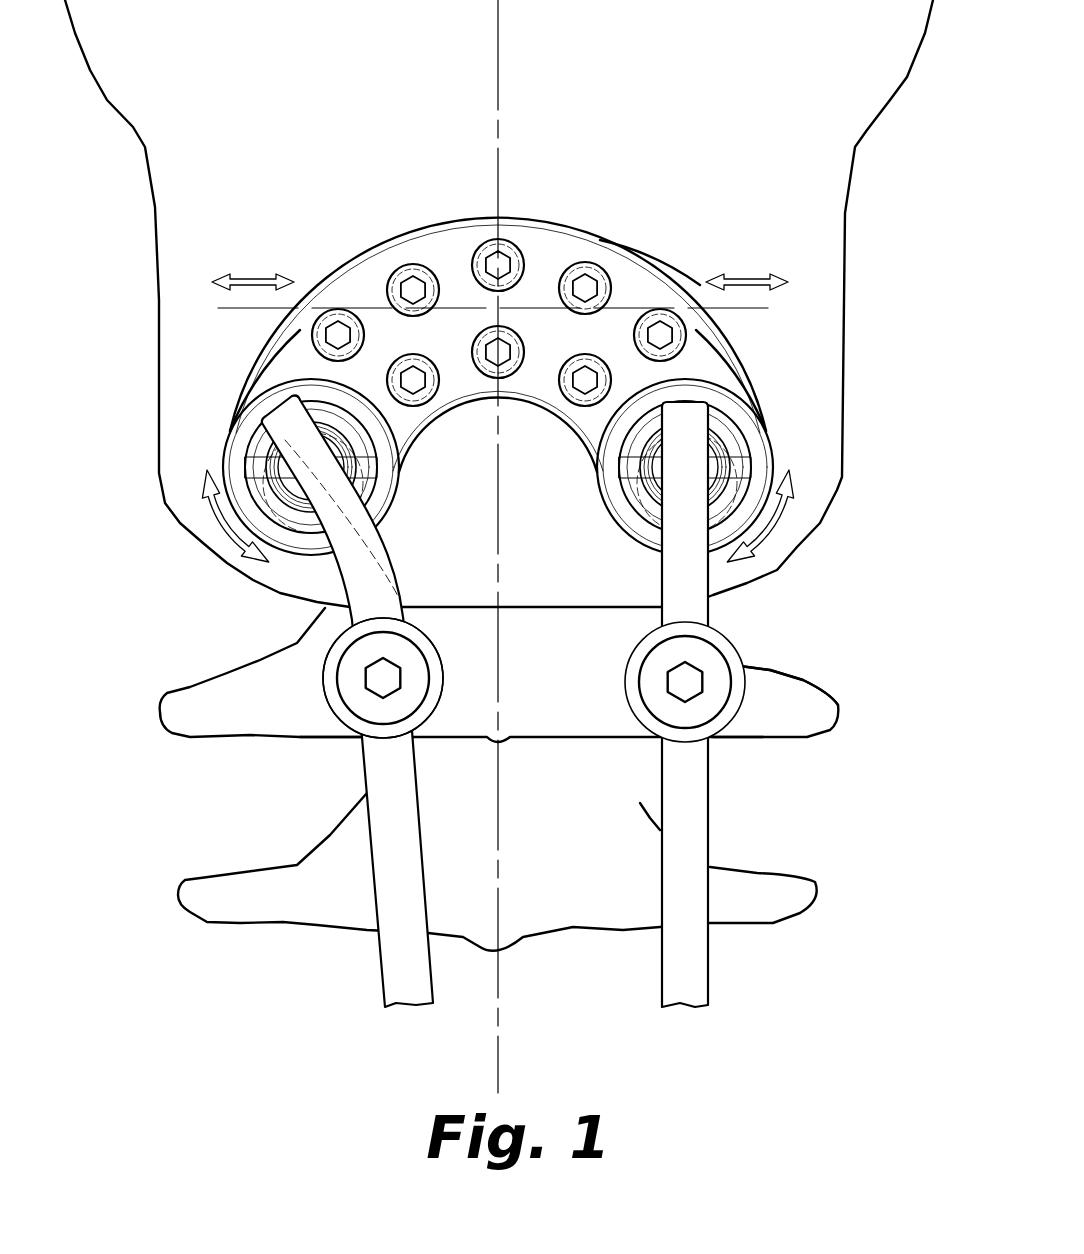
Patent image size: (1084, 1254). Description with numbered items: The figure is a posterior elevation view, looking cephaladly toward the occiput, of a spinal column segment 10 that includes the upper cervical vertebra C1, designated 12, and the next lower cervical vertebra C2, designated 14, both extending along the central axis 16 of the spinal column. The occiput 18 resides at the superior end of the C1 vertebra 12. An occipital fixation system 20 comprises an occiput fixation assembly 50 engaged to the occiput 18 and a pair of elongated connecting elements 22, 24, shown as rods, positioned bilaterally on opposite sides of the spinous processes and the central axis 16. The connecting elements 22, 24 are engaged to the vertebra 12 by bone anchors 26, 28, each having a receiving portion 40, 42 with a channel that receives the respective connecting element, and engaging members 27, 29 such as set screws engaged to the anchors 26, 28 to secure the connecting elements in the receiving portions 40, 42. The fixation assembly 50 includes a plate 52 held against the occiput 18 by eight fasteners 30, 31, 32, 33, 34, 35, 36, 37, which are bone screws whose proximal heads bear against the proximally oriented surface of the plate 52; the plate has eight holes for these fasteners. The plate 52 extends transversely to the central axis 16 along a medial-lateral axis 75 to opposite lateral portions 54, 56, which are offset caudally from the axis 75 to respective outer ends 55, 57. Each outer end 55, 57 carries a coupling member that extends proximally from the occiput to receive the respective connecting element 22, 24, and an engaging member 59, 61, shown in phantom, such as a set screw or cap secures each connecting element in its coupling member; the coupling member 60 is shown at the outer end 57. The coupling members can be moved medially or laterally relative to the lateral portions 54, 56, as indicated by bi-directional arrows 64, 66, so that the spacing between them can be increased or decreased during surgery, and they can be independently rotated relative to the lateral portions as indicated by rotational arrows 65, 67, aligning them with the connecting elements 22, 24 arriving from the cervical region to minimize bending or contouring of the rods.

The spinal column segment 10 is at (193, 980).
The upper cervical vertebra C1 12 is at (205, 705).
The lower cervical vertebra C2 14 is at (232, 895).
The central axis 16 is at (500, 1021).
The occiput 18 is at (178, 418).
The occipital fixation system 20 is at (833, 445).
The connecting element 22 is at (392, 962).
The connecting element 24 is at (702, 815).
The bone anchor 26 is at (318, 719).
The engaging member 27 is at (355, 672).
The bone anchor 28 is at (752, 722).
The engaging member 29 is at (695, 705).
The fastener 30 is at (345, 310).
The fastener 31 is at (418, 265).
The fastener 32 is at (490, 240).
The fastener 33 is at (580, 262).
The fastener 34 is at (660, 308).
The fastener 35 is at (420, 406).
The fastener 36 is at (490, 366).
The fastener 37 is at (565, 405).
The receiving portion 40 is at (425, 702).
The receiving portion 42 is at (298, 570).
The occiput fixation assembly 50 is at (650, 197).
The plate 52 is at (679, 247).
The lateral portion 54 is at (250, 392).
The outer end 55 is at (300, 563).
The lateral portion 56 is at (772, 376).
The outer end 57 is at (720, 560).
The engaging member 59 is at (392, 578).
The coupling member 60 is at (735, 431).
The engaging member 61 is at (698, 398).
The bi-directional arrow 64 is at (248, 278).
The rotational arrow 65 is at (228, 540).
The bi-directional arrow 66 is at (752, 278).
The rotational arrow 67 is at (775, 525).
The medial-lateral axis 75 is at (783, 310).